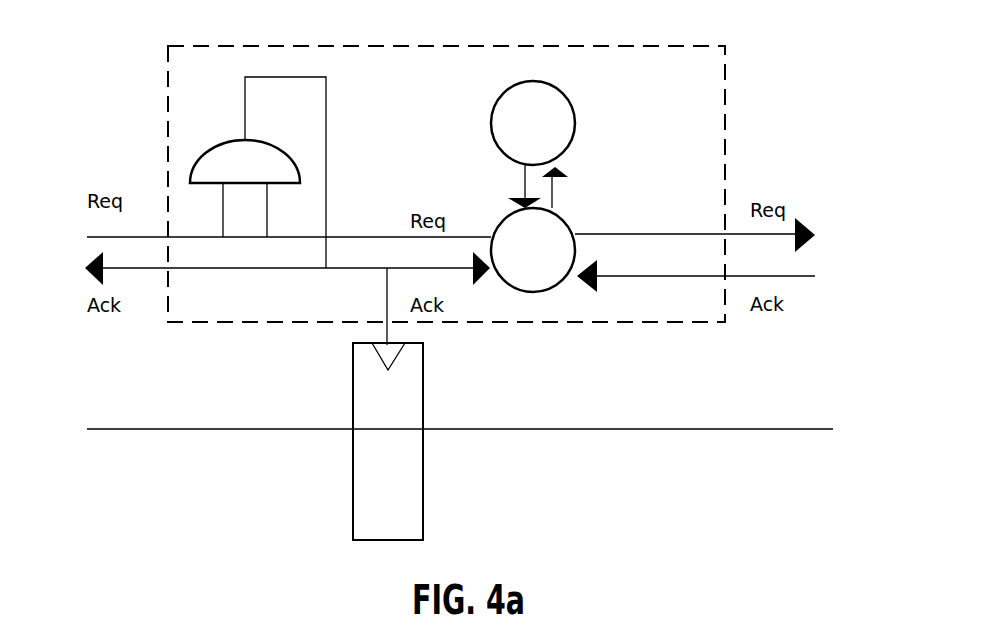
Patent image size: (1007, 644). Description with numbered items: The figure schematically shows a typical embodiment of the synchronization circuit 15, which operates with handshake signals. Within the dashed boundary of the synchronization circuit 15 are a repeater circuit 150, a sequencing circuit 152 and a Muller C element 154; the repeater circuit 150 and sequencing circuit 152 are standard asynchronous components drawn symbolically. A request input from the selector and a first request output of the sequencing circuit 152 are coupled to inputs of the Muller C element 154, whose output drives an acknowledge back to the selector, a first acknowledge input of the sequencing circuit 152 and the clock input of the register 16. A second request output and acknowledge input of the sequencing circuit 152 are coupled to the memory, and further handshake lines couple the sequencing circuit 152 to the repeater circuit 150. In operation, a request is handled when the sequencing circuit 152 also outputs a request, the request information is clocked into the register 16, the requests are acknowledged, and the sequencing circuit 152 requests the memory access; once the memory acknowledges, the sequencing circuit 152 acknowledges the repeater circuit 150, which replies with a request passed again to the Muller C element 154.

The synchronization circuit 15 is at (723, 108).
The repeater circuit 150 is at (577, 115).
The sequencing circuit 152 is at (538, 293).
The Muller C element 154 is at (200, 162).
The register 16 is at (352, 482).